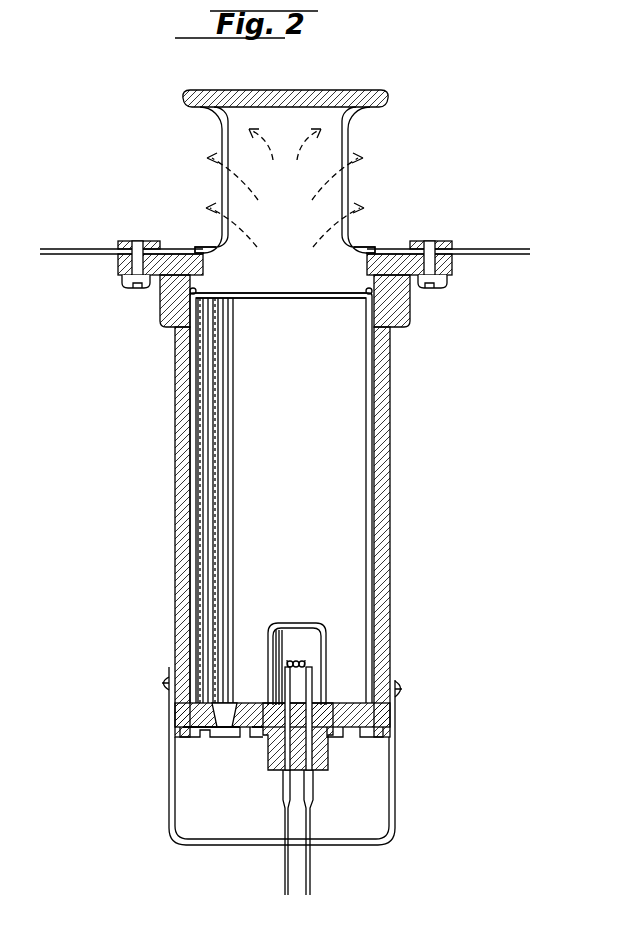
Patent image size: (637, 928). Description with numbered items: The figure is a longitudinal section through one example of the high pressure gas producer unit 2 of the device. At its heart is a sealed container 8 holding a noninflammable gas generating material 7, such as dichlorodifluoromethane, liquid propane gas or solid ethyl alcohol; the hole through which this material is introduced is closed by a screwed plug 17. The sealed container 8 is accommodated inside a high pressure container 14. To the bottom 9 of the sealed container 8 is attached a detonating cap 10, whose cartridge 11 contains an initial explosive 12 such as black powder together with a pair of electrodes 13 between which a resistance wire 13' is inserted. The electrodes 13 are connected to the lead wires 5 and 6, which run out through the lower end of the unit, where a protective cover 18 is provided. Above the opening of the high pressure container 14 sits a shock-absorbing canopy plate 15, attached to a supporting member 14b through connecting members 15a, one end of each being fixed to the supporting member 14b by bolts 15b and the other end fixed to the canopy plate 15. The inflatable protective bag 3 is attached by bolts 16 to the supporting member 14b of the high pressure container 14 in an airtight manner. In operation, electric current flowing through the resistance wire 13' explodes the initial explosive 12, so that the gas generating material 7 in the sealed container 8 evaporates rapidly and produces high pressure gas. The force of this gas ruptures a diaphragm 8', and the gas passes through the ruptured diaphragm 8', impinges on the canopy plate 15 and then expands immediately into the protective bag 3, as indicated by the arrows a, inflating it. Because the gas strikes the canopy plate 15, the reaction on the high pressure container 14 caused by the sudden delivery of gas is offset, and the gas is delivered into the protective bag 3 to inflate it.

The high pressure gas producer unit 2 is at (88, 424).
The inflatable protective bag 3 is at (64, 255).
The lead wire 5 is at (283, 868).
The lead wire 6 is at (313, 868).
The noninflammable gas generating material 7 is at (240, 440).
The sealed container 8 is at (277, 495).
The diaphragm 8' is at (322, 332).
The bottom 9 is at (355, 713).
The detonating cap 10 is at (267, 627).
The cartridge 11 is at (267, 662).
The initial explosive 12 is at (293, 642).
The electrodes 13 is at (364, 697).
The resistance wire 13' is at (372, 623).
The high pressure container 14 is at (384, 459).
The supporting member 14b is at (186, 258).
The shock-absorbing canopy plate 15 is at (296, 90).
The connecting members 15a is at (206, 109).
The bolts 15b is at (191, 247).
The bolts 16 is at (130, 288).
The screwed plug 17 is at (232, 737).
The protective cover 18 is at (395, 812).
The arrows a is at (288, 188).